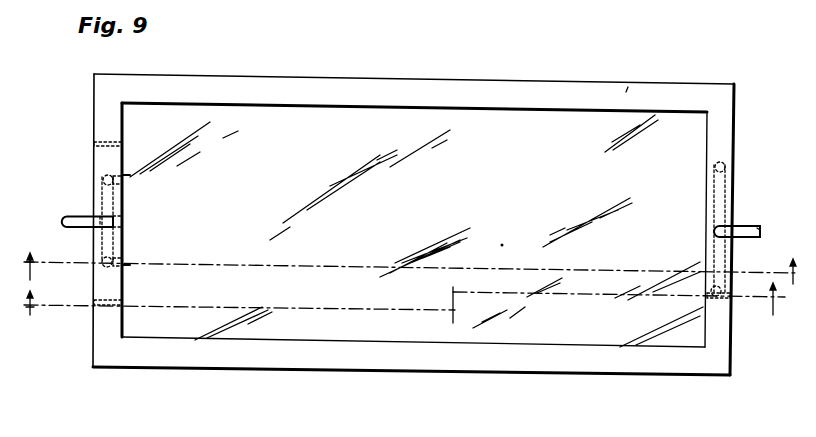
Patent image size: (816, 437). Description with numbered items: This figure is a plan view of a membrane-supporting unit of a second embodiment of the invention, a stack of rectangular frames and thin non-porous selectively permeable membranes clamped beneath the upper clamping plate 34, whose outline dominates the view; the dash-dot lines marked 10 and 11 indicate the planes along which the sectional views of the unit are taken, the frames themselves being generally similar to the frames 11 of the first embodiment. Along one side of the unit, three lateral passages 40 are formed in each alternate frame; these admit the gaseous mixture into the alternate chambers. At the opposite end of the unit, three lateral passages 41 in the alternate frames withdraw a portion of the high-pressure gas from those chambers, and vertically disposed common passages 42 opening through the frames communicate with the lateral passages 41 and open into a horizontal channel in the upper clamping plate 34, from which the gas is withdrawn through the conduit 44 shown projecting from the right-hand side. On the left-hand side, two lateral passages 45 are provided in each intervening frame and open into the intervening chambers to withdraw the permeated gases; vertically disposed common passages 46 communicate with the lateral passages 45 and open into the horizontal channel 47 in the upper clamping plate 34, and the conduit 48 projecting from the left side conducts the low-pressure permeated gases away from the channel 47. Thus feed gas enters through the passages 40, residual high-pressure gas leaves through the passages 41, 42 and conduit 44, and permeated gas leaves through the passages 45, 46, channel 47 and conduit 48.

The section line 10- 10 is at (411, 273).
The frame 11 is at (404, 304).
The upper clamping plate 34 is at (710, 374).
The lateral passages 40 is at (100, 143).
The lateral passages 41 is at (707, 168).
The common passages 42 is at (723, 167).
The conduit 44 is at (738, 227).
The lateral passages 45 is at (128, 174).
The common passages 46 is at (104, 177).
The horizontal channel 47 is at (103, 194).
The conduit 48 is at (71, 227).